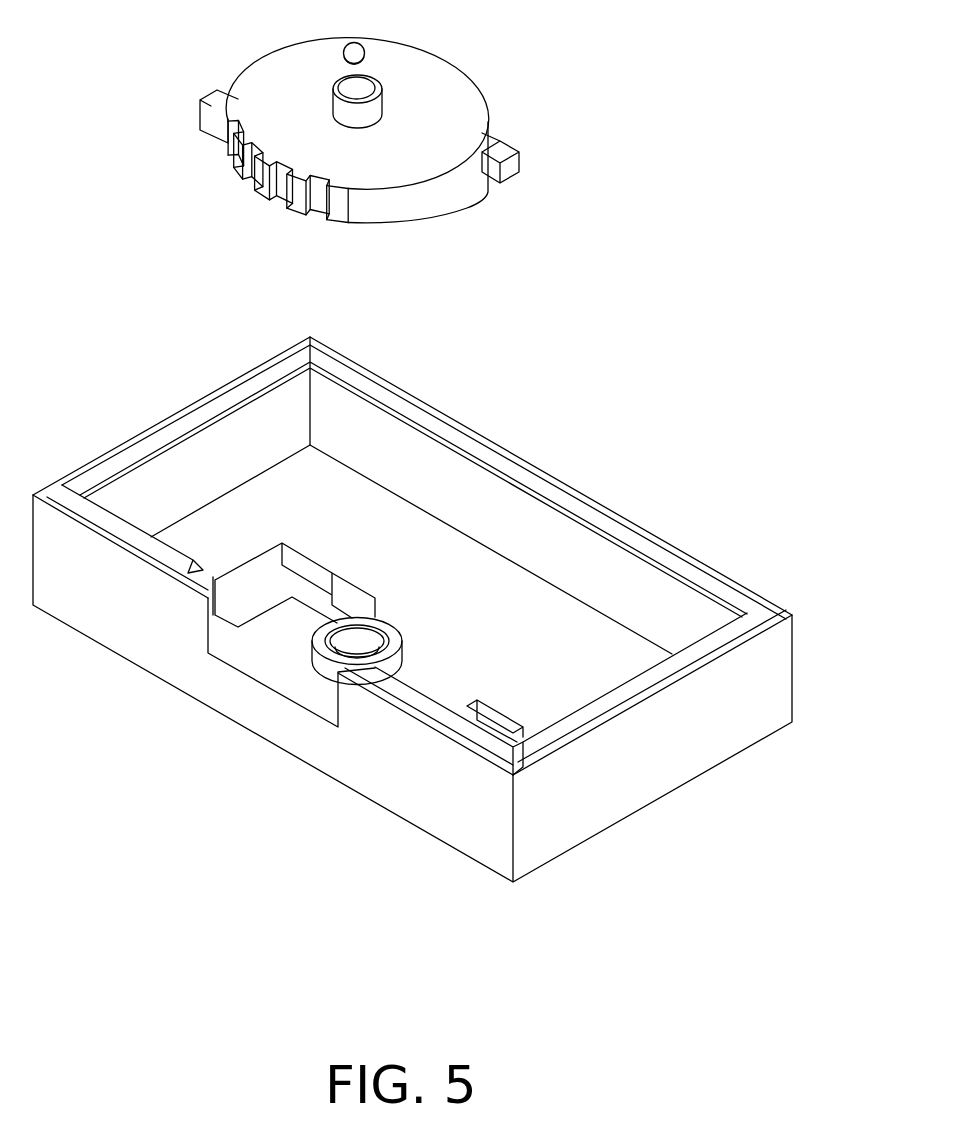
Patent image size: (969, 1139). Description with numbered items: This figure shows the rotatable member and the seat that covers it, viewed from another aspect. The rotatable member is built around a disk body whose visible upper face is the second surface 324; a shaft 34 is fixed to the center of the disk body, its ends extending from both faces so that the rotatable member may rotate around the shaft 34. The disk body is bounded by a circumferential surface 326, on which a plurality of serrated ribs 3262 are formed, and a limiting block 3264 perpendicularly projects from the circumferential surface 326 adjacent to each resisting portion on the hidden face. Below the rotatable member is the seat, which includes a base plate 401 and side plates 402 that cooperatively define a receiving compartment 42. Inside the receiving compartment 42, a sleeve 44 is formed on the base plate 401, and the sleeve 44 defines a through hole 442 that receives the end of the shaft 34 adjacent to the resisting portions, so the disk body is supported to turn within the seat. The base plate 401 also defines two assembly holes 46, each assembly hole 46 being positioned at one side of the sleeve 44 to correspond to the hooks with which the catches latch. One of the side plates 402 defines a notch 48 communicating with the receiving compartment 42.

The limiting block 3264 is at (214, 100).
The shaft 34 is at (362, 85).
The second surface 324 is at (455, 95).
The serrated ribs 3262 is at (280, 193).
The circumferential surface 326 is at (386, 212).
The assembly hole 46 is at (260, 600).
The base plate 401 is at (425, 527).
The receiving compartment 42 is at (605, 580).
The notch 48 is at (237, 655).
The through hole 442 is at (345, 658).
The sleeve 44 is at (320, 660).
The side plates 402 is at (590, 808).